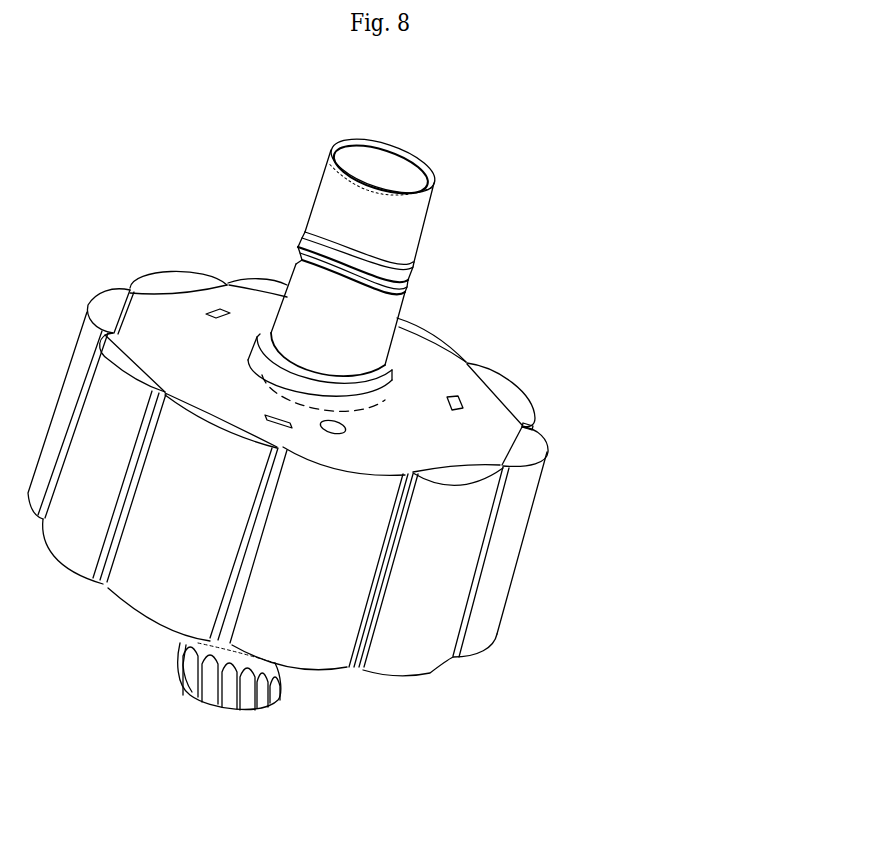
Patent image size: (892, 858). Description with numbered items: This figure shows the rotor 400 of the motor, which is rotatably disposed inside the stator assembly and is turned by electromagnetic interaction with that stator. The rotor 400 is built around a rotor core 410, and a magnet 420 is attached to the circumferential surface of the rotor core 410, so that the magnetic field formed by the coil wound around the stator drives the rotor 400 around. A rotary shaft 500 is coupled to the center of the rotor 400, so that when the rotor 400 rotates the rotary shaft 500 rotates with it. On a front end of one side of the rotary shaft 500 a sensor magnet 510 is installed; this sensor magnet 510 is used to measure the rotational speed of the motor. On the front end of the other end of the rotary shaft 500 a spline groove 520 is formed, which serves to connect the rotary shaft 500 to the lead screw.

The rotor 400 is at (371, 473).
The rotor core 410 is at (455, 438).
The magnet 420 is at (433, 557).
The rotary shaft 500 is at (343, 441).
The sensor magnet 510 is at (392, 162).
The spline groove 520 is at (203, 710).